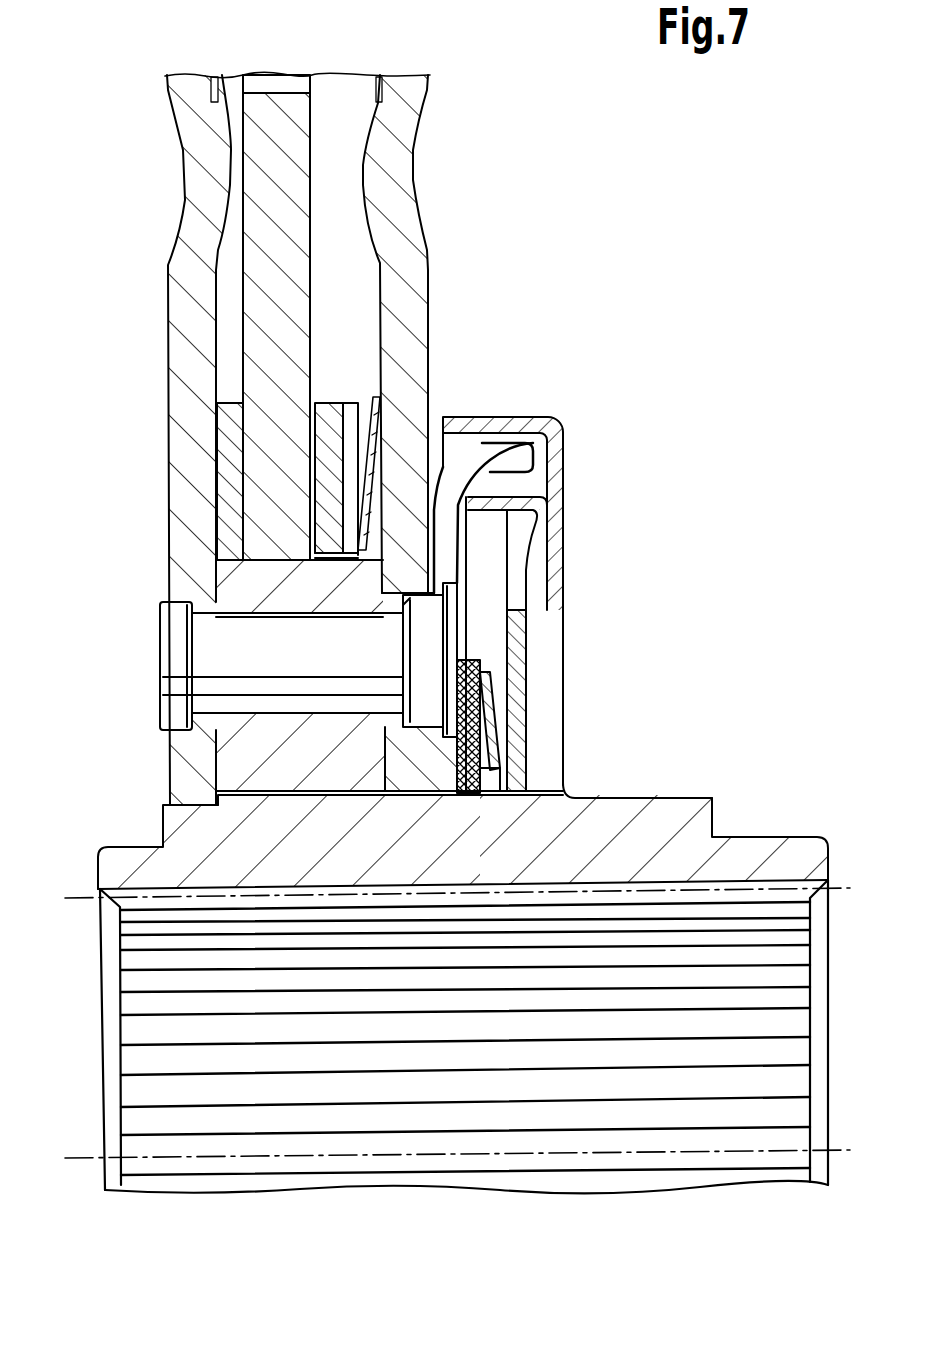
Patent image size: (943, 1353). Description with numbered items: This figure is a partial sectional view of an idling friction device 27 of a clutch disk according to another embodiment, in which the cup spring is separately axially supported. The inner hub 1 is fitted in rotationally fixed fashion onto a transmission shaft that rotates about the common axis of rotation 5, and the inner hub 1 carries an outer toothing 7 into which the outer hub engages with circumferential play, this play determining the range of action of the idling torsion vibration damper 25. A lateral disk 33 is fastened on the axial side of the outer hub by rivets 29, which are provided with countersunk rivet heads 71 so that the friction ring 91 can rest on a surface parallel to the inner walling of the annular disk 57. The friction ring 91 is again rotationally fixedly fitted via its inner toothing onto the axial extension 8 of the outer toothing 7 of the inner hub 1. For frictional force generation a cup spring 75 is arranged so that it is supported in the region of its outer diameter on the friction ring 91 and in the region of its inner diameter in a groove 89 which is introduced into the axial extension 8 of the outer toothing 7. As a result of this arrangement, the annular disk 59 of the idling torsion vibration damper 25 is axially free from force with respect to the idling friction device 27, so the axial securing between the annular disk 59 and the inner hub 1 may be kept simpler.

The inner hub 1 is at (693, 825).
The axis of rotation 5 is at (505, 1160).
The outer toothing 7 is at (292, 760).
The axial extension 8 is at (528, 780).
The idling torsion vibration damper 25 is at (540, 395).
The idling friction device 27 is at (470, 640).
The rivets 29 is at (232, 690).
The lateral disk 33 is at (412, 309).
The annular disk 57 is at (447, 543).
The annular disk 59 is at (528, 633).
The countersunk rivet heads 71 is at (472, 666).
The cup spring 75 is at (493, 716).
The groove 89 is at (494, 766).
The friction ring 91 is at (468, 686).